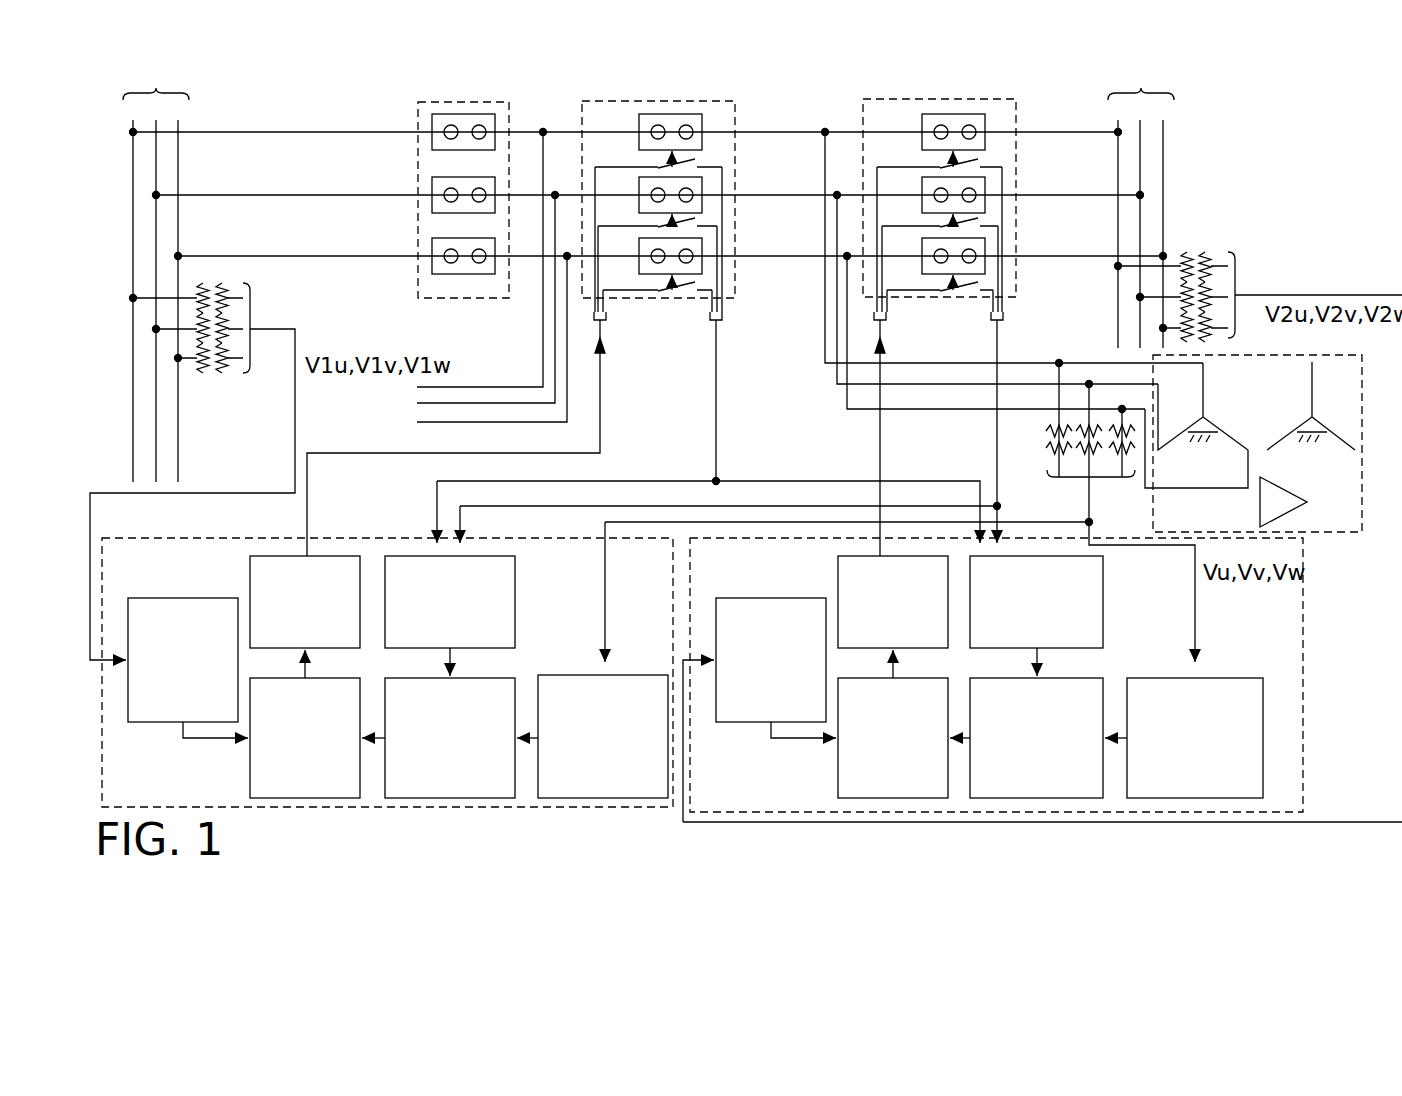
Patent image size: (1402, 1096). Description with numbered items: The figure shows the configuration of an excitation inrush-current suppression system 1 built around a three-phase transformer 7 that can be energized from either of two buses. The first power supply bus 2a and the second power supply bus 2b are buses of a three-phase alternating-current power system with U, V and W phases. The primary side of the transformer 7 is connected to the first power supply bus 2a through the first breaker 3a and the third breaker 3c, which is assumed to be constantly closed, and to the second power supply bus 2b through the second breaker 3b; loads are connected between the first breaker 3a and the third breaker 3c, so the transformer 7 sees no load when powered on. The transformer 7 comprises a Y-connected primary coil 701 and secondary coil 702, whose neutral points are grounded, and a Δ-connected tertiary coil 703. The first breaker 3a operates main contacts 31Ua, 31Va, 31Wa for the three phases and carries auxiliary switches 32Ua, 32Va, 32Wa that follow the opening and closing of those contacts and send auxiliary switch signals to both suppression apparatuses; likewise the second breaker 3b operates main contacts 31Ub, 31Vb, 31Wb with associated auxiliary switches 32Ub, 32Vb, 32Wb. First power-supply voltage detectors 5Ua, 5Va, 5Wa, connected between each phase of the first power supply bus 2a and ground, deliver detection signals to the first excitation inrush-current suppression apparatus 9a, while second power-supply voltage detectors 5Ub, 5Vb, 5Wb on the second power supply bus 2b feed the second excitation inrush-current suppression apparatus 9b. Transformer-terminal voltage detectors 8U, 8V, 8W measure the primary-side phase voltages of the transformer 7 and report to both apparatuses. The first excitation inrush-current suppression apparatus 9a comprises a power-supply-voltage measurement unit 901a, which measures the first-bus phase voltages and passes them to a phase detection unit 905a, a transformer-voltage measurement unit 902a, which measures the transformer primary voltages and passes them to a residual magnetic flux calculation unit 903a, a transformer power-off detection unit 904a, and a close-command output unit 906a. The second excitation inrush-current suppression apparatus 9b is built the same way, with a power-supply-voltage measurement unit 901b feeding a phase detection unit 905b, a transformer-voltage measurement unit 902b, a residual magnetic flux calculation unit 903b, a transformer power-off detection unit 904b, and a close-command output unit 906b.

The excitation inrush-current suppression system 1 is at (1258, 130).
The first power supply bus 2a is at (157, 273).
The second power supply bus 2b is at (1141, 206).
The first breaker 3a is at (660, 100).
The second breaker 3b is at (938, 100).
The third breaker 3c is at (468, 100).
The main contact 31Ua is at (702, 126).
The main contact 31Va is at (702, 189).
The main contact 31Wa is at (702, 249).
The auxiliary switch 32Ua is at (690, 161).
The auxiliary switch 32Va is at (690, 223).
The auxiliary switch 32Wa is at (690, 291).
The main contact 31Ub is at (985, 126).
The main contact 31Vb is at (985, 189).
The main contact 31Wb is at (985, 249).
The auxiliary switch 32Ub is at (973, 161).
The auxiliary switch 32Vb is at (973, 223).
The auxiliary switch 32Wb is at (973, 291).
The first power-supply voltage detector 5Ua is at (207, 286).
The first power-supply voltage detector 5Va is at (223, 321).
The first power-supply voltage detector 5Wa is at (205, 375).
The second power-supply voltage detector 5Ub is at (1210, 256).
The second power-supply voltage detector 5Vb is at (1210, 288).
The second power-supply voltage detector 5Wb is at (1212, 339).
The transformer 7 is at (1351, 534).
The primary coil 701 is at (1203, 417).
The secondary coil 702 is at (1312, 417).
The tertiary coil 703 is at (1280, 489).
The transformer-terminal voltage detector 8U is at (1051, 460).
The transformer-terminal voltage detector 8V is at (1080, 460).
The transformer-terminal voltage detector 8W is at (1130, 460).
The first excitation inrush-current suppression apparatus 9a is at (154, 538).
The second excitation inrush-current suppression apparatus 9b is at (1303, 740).
The power-supply-voltage measurement unit 901a is at (203, 598).
The transformer-voltage measurement unit 902a is at (568, 674).
The residual magnetic flux calculation unit 903a is at (440, 676).
The transformer power-off detection unit 904a is at (407, 554).
The phase detection unit 905a is at (250, 768).
The close-command output unit 906a is at (339, 554).
The power-supply-voltage measurement unit 901b is at (740, 723).
The transformer-voltage measurement unit 902b is at (1240, 677).
The residual magnetic flux calculation unit 903b is at (1026, 676).
The transformer power-off detection unit 904b is at (1103, 602).
The phase detection unit 905b is at (838, 791).
The close-command output unit 906b is at (838, 574).